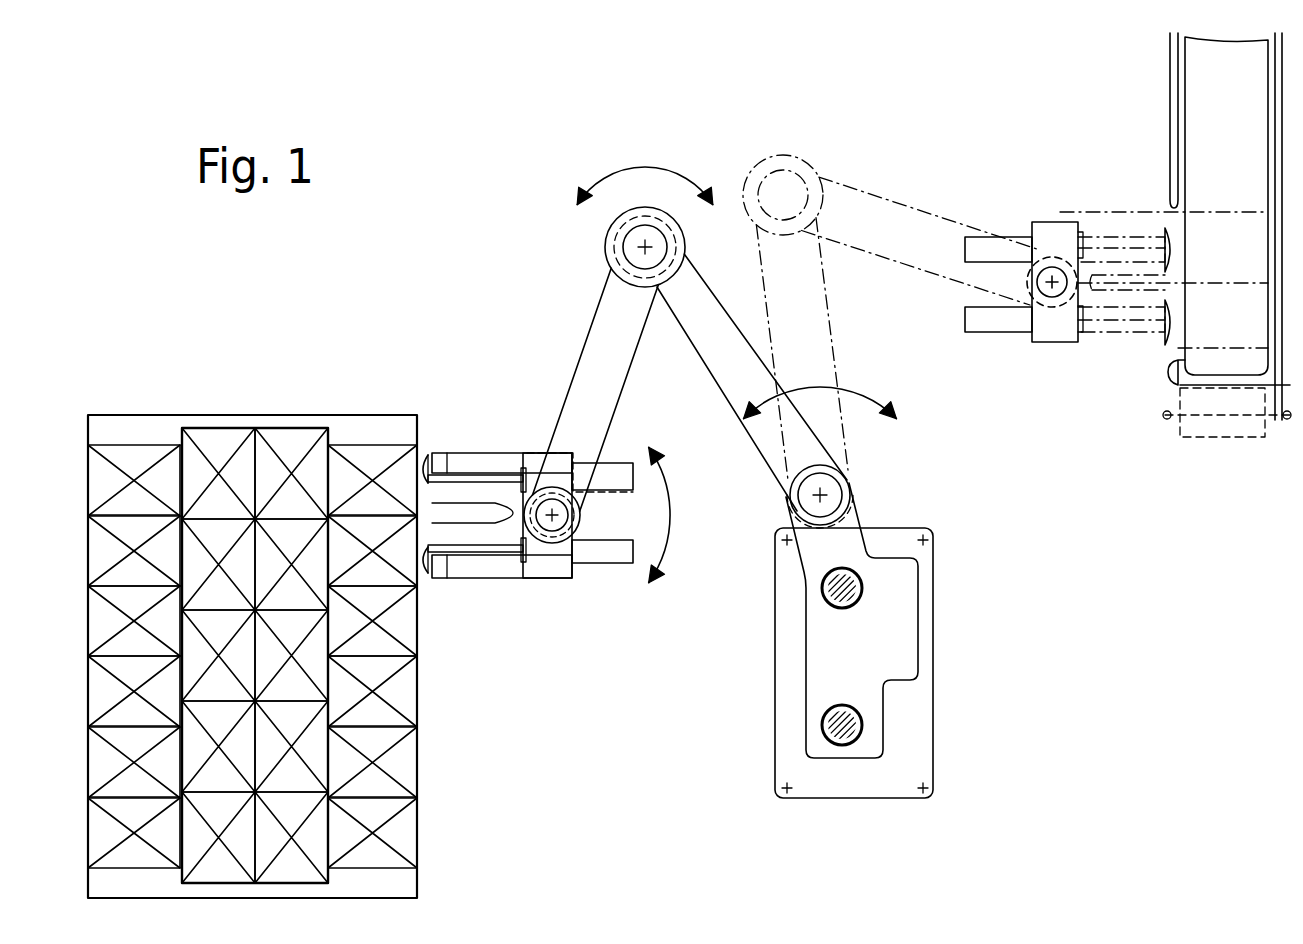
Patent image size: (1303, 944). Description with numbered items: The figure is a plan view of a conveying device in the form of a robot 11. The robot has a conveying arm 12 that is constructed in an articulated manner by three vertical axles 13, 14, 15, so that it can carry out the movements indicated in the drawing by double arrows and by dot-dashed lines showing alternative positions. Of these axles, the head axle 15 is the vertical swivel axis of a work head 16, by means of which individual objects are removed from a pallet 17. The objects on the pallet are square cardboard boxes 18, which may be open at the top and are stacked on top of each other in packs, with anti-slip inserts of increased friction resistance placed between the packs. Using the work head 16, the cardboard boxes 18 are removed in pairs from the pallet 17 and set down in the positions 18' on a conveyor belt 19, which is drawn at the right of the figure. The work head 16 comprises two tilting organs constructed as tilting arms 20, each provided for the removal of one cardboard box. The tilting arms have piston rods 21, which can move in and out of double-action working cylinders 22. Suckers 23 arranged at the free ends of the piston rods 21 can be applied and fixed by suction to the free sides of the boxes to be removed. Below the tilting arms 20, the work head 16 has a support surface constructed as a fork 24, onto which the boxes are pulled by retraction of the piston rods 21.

The robot 11 is at (782, 714).
The conveying arm 12 is at (585, 315).
The vertical axle 13 is at (822, 495).
The vertical axle 14 is at (645, 247).
The head axle 15 is at (555, 520).
The work head 16 is at (530, 596).
The pallet 17 is at (160, 415).
The cardboard boxes 18 is at (299, 594).
The positions 18' is at (1095, 295).
The conveyor belt 19 is at (1208, 115).
The tilting arms 20 is at (507, 465).
The piston rods 21 is at (447, 458).
The double-action working cylinders 22 is at (622, 468).
The suckers 23 is at (428, 458).
The fork 24 is at (473, 458).